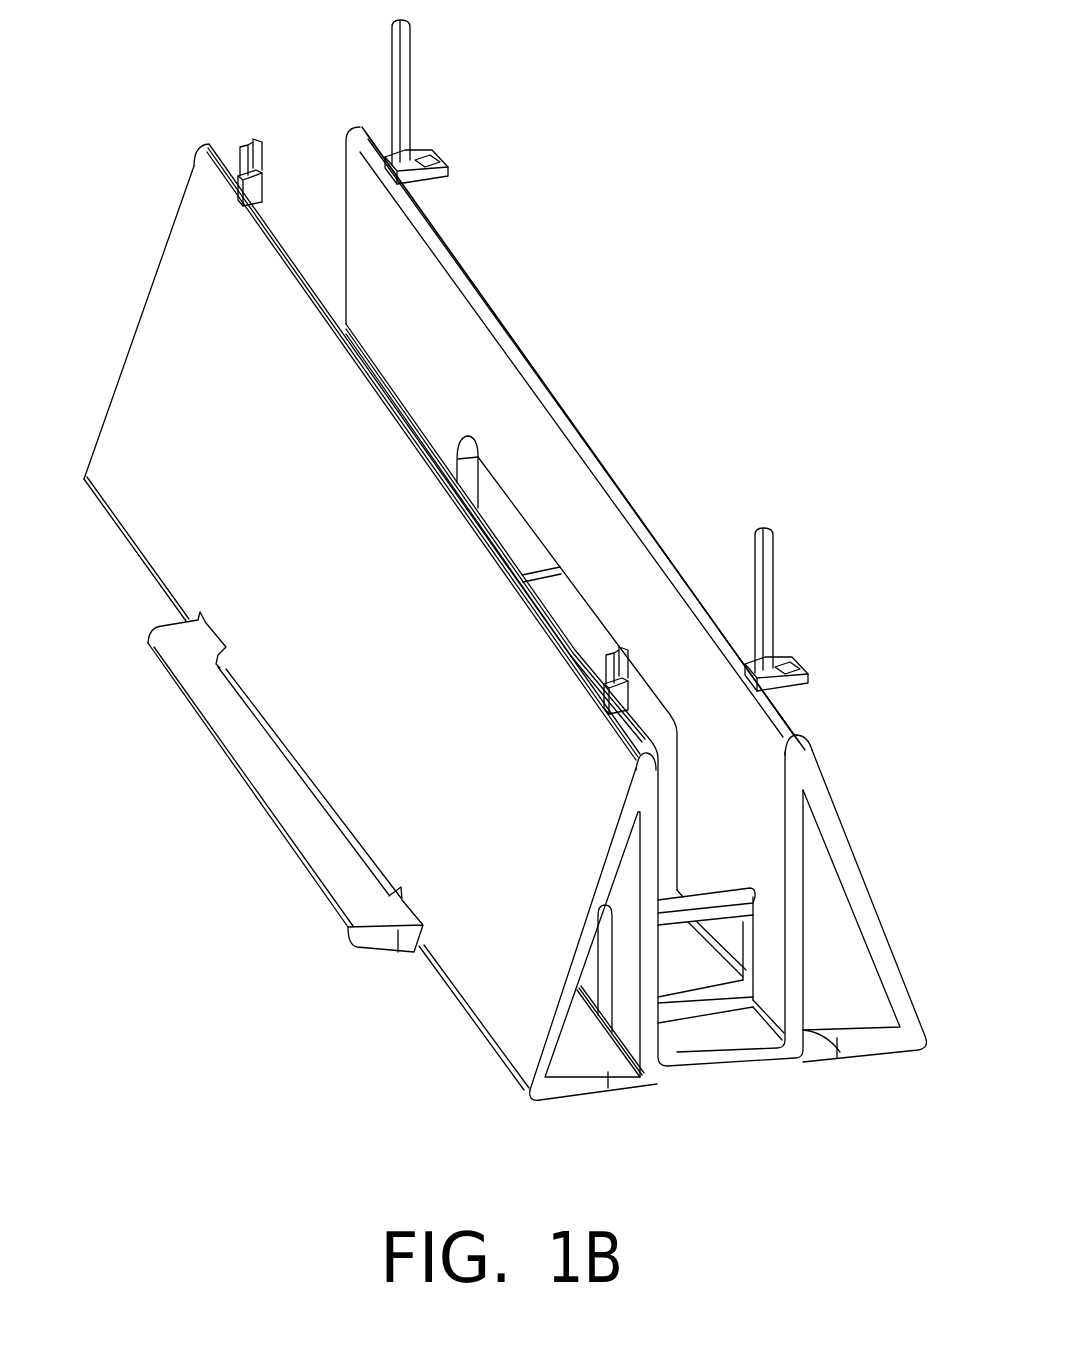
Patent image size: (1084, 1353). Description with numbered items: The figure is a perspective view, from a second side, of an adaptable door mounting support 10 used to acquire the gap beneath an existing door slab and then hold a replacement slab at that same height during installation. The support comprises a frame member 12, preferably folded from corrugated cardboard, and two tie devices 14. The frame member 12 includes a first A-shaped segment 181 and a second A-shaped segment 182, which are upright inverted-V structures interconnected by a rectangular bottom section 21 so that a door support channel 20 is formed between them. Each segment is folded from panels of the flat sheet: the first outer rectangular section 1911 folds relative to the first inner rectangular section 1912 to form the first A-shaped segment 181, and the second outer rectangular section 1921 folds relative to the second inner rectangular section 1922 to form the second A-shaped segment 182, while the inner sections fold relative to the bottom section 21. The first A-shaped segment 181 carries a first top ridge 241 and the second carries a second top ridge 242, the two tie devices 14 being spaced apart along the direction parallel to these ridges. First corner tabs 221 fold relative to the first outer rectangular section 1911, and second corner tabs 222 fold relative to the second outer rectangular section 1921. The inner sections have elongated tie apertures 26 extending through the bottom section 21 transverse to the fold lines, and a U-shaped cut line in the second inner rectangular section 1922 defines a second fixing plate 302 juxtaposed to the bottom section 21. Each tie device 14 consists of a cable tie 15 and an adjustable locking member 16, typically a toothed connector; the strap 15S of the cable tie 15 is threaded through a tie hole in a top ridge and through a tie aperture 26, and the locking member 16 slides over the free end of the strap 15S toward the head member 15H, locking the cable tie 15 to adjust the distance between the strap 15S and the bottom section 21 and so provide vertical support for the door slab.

The adaptable door mounting support 10 is at (595, 316).
The frame member 12 is at (140, 266).
The tie device 14 is at (424, 102).
The cable tie 15 is at (374, 71).
The head member 15H is at (237, 194).
The strap 15S is at (722, 897).
The adjustable locking member 16 is at (448, 174).
The first A-shaped segment 181 is at (862, 830).
The second A-shaped segment 182 is at (165, 517).
The first outer rectangular section 1911 is at (827, 900).
The first inner rectangular section 1912 is at (550, 453).
The second outer rectangular section 1921 is at (134, 358).
The second inner rectangular section 1922 is at (622, 1033).
The door support channel 20 is at (385, 318).
The rectangular bottom section 21 is at (688, 1043).
The first corner tabs 221 is at (860, 1017).
The second corner tabs 222 is at (570, 1063).
The first top ridge 241 is at (483, 290).
The second top ridge 242 is at (408, 409).
The elongated tie aperture 26 is at (727, 998).
The second fixing plate 302 is at (262, 832).